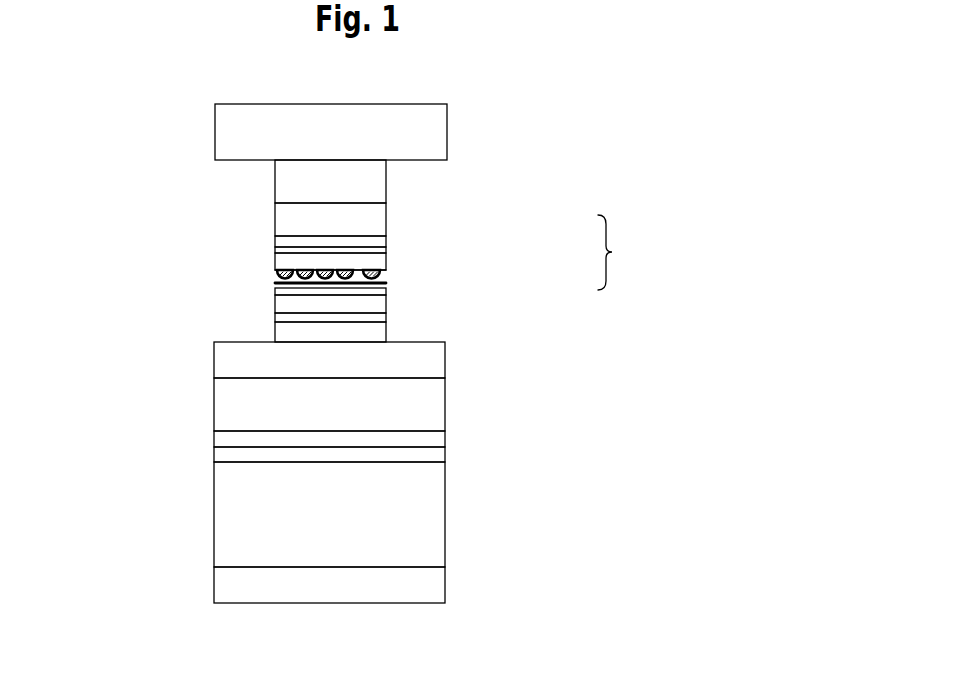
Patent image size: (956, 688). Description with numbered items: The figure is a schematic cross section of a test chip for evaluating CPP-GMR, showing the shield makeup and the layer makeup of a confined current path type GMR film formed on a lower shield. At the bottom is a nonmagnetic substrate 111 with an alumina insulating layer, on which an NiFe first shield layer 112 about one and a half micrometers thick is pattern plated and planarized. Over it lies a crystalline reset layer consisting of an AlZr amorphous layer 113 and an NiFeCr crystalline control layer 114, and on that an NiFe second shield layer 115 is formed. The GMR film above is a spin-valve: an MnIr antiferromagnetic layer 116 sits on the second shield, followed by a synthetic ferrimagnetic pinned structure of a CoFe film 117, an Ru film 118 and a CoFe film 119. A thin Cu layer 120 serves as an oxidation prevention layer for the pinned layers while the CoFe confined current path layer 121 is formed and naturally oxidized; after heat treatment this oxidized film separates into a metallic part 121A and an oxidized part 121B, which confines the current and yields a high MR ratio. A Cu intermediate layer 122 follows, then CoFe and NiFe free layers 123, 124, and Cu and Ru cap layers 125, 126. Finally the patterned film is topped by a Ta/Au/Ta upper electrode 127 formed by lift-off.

The nonmagnetic substrate 111 is at (432, 590).
The first shield layer 112 is at (225, 507).
The amorphous layer 113 is at (430, 455).
The NiFeCr crystalline control layer 114 is at (223, 435).
The second shield layer 115 is at (393, 412).
The antiferromagnetic layer 116 is at (408, 360).
The pinned layer (CoFe film) 117 is at (387, 330).
The pinned layer (Ru film) 118 is at (287, 318).
The pinned layer (CoFe film) 119 is at (387, 302).
The Cu layer 120 is at (280, 291).
The confined current path layer 121 is at (630, 252).
The metallic part 121A is at (387, 278).
The oxidized part 121B is at (387, 270).
The intermediate layer 122 is at (287, 262).
The free layer (CoFe film) 123 is at (386, 250).
The free layer (NiFe film) 124 is at (285, 238).
The cap layer (Cu film) 125 is at (373, 220).
The cap layer (Ru film) 126 is at (371, 187).
The upper electrode 127 is at (228, 122).